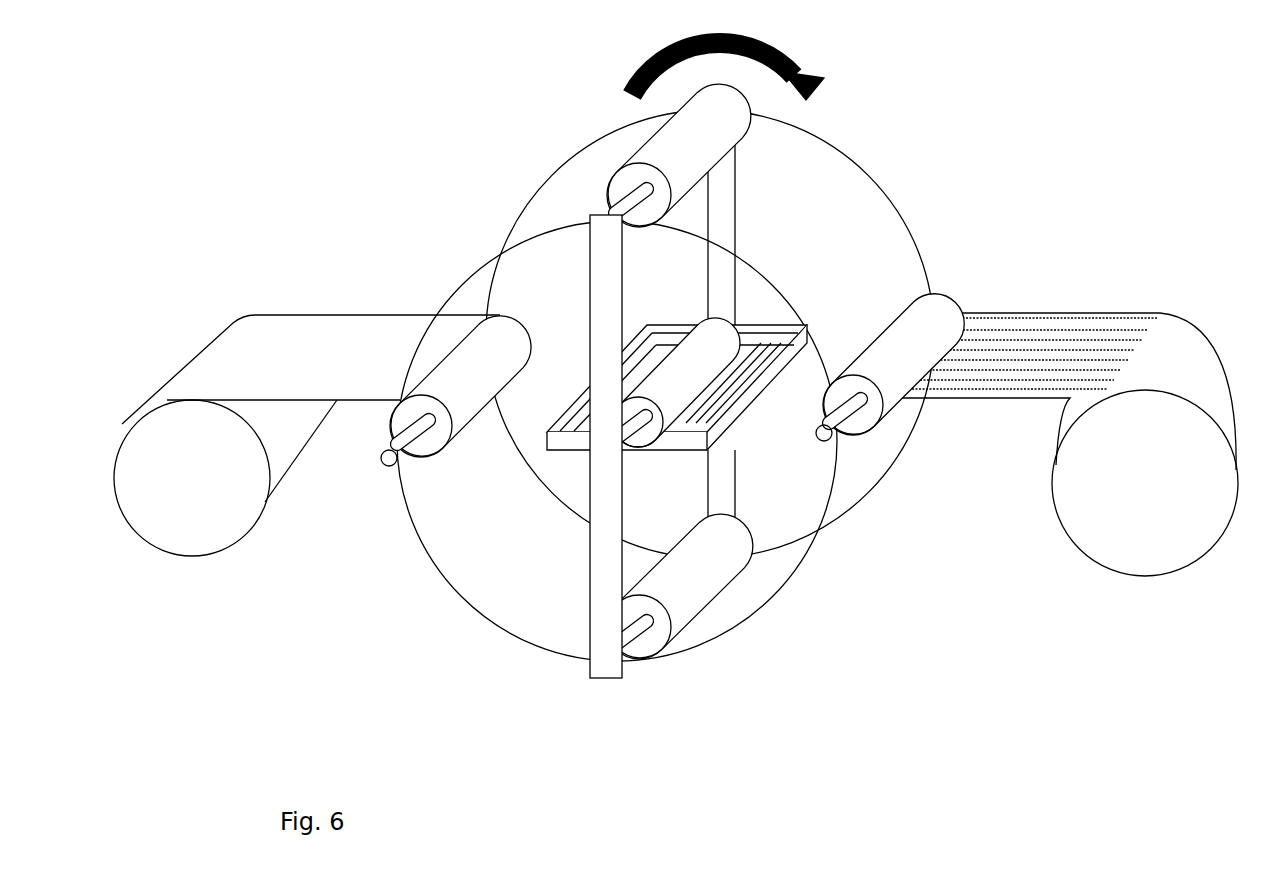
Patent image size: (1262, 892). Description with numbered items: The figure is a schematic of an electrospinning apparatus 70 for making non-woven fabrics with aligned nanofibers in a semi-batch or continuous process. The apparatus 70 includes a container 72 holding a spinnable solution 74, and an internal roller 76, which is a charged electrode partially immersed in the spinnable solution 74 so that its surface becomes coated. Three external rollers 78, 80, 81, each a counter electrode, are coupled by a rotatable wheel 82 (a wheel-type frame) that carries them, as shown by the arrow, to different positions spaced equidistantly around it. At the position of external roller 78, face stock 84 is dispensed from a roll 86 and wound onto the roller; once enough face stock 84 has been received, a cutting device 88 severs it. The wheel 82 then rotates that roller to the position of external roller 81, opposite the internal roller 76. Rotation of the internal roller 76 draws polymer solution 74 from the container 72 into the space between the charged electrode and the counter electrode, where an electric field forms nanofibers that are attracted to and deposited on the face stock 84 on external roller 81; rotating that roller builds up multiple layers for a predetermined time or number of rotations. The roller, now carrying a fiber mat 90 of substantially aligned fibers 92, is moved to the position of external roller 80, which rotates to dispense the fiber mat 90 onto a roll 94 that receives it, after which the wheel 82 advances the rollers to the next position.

The electrospinning apparatus 70 is at (462, 125).
The container 72 is at (753, 405).
The spinnable solution 74 is at (795, 322).
The internal roller 76 is at (730, 348).
The external roller 78 is at (405, 468).
The external roller 80 is at (872, 420).
The external roller 81 is at (655, 153).
The wheel 82 is at (477, 612).
The face stock 84 is at (268, 348).
The roll 86 is at (203, 527).
The cutting device 88 is at (397, 383).
The fiber mat 90 is at (993, 400).
The aligned fibers 92 is at (1065, 350).
The roll 94 is at (1110, 548).